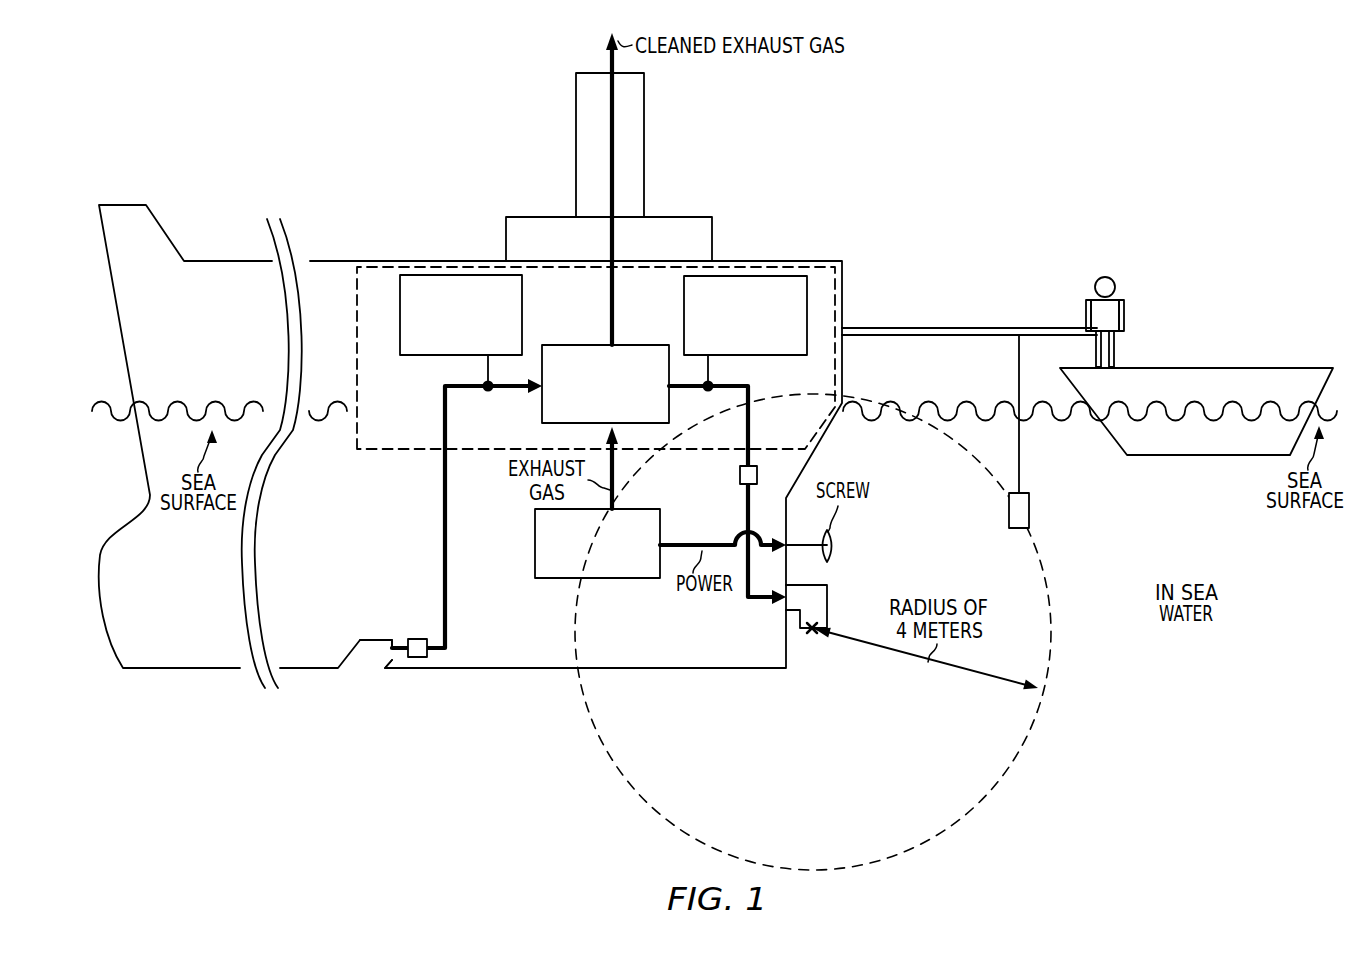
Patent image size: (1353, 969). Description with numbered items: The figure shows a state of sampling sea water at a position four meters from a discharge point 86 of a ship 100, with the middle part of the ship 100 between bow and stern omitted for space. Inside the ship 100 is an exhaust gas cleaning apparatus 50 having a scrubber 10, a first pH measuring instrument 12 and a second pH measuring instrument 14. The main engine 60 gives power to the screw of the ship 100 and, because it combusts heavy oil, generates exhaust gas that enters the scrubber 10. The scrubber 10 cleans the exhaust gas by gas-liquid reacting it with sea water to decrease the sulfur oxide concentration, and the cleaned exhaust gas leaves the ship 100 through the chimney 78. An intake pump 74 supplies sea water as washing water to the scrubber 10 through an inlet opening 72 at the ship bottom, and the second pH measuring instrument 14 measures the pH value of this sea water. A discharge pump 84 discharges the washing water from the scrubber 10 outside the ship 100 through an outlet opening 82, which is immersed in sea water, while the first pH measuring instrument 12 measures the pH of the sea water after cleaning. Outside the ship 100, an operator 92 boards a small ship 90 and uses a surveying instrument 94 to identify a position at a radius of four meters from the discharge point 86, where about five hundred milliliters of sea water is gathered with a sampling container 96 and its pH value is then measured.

The ship 100 is at (240, 199).
The chimney 78 is at (645, 145).
The scrubber 10 is at (576, 344).
The first pH measuring instrument 12 is at (782, 356).
The second pH measuring instrument 14 is at (425, 356).
The exhaust gas cleaning apparatus 50 is at (396, 450).
The main engine 60 is at (534, 547).
The inlet opening 72 is at (378, 654).
The intake pump 74 is at (418, 638).
The outlet opening 82 is at (828, 612).
The discharge pump 84 is at (739, 475).
The discharge point 86 is at (815, 645).
The small ship 90 is at (1212, 456).
The operator 92 is at (1125, 306).
The surveying instrument 94 is at (942, 327).
The sampling container 96 is at (1030, 507).